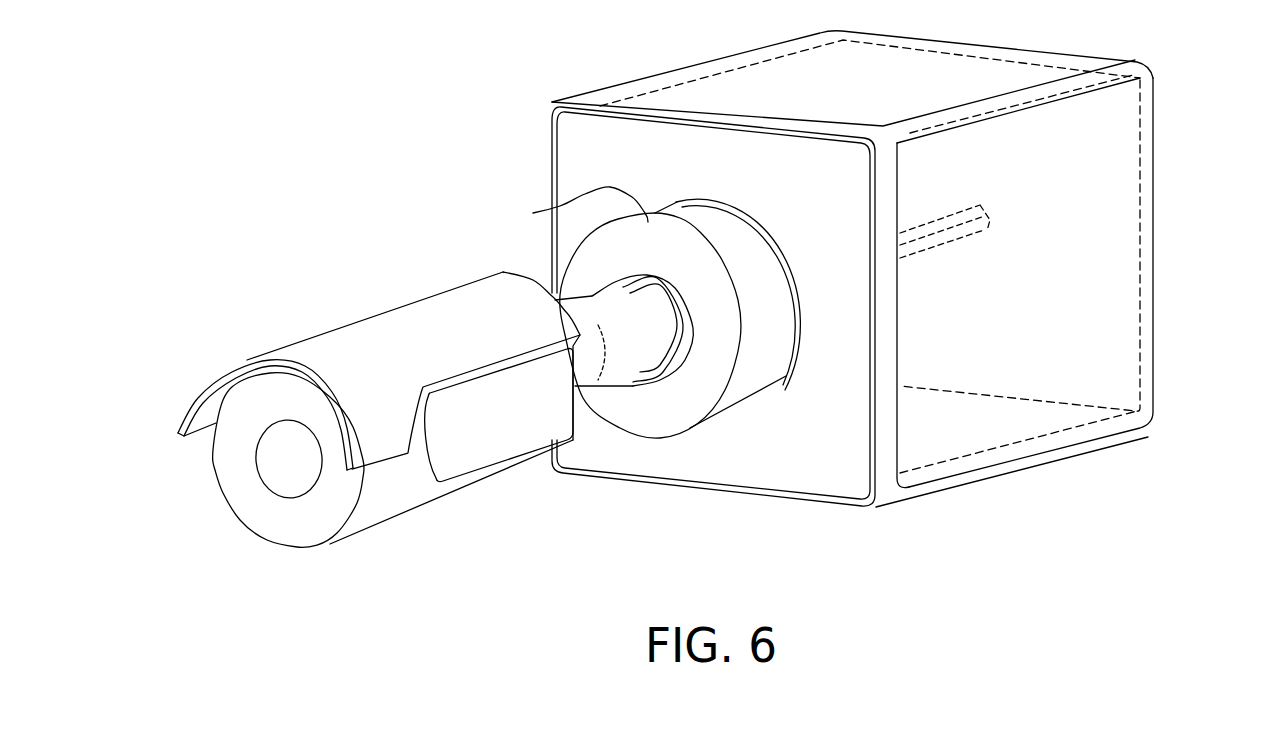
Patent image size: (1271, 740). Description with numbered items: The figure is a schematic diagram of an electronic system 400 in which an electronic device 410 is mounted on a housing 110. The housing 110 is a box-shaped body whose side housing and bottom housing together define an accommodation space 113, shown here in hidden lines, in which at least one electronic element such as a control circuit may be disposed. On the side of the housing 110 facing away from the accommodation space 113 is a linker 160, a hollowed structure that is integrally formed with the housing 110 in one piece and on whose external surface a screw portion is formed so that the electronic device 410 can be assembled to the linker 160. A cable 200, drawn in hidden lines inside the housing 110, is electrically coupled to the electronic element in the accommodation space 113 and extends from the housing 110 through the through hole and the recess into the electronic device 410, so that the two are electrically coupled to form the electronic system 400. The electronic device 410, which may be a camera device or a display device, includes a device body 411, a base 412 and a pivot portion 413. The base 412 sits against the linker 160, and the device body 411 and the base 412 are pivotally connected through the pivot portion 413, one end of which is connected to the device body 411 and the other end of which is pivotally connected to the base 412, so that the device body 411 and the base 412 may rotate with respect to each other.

The electronic system 400 is at (65, 101).
The housing 110 is at (807, 480).
The accommodation space 113 is at (1140, 167).
The linker 160 is at (783, 378).
The cable 200 is at (981, 199).
The electronic device 410 is at (527, 162).
The device body 411 is at (395, 327).
The base 412 is at (533, 213).
The pivot portion 413 is at (597, 350).